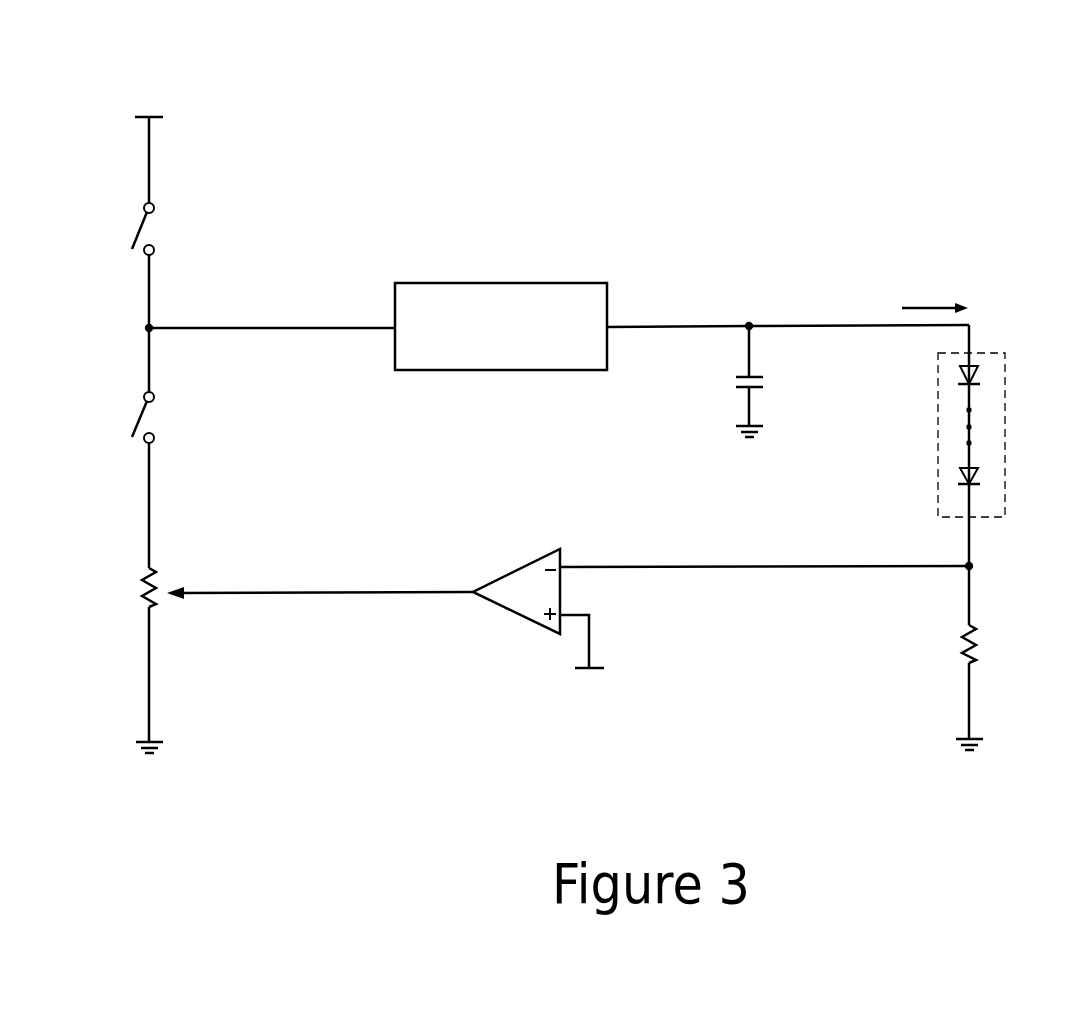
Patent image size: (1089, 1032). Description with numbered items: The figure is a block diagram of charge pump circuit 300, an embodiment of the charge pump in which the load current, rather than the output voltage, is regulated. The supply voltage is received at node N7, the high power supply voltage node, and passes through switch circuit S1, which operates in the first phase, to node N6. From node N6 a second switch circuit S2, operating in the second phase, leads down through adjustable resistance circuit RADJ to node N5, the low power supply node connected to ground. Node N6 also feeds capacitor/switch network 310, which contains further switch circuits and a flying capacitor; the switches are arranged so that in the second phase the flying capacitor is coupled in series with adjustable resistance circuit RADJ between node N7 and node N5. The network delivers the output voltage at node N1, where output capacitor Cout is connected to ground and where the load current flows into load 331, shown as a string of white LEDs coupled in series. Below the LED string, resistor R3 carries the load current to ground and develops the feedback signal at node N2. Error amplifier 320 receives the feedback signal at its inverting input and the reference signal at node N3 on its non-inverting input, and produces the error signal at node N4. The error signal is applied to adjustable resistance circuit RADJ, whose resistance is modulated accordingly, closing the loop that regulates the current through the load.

The charge pump circuit 300 is at (611, 76).
The capacitor/switch network 310 is at (497, 283).
The error amplifier 320 is at (513, 569).
The load 331 is at (1005, 437).
The node N1 is at (749, 325).
The node N2 is at (970, 567).
The node N3 is at (590, 642).
The node N4 is at (295, 593).
The node N5 is at (149, 680).
The node N6 is at (147, 333).
The node N7 is at (150, 158).
The switch circuit S1 is at (163, 229).
The switch circuit S2 is at (163, 417).
The adjustable resistance circuit RADJ is at (118, 525).
The output capacitor Cout is at (777, 381).
The resistor R3 is at (989, 652).